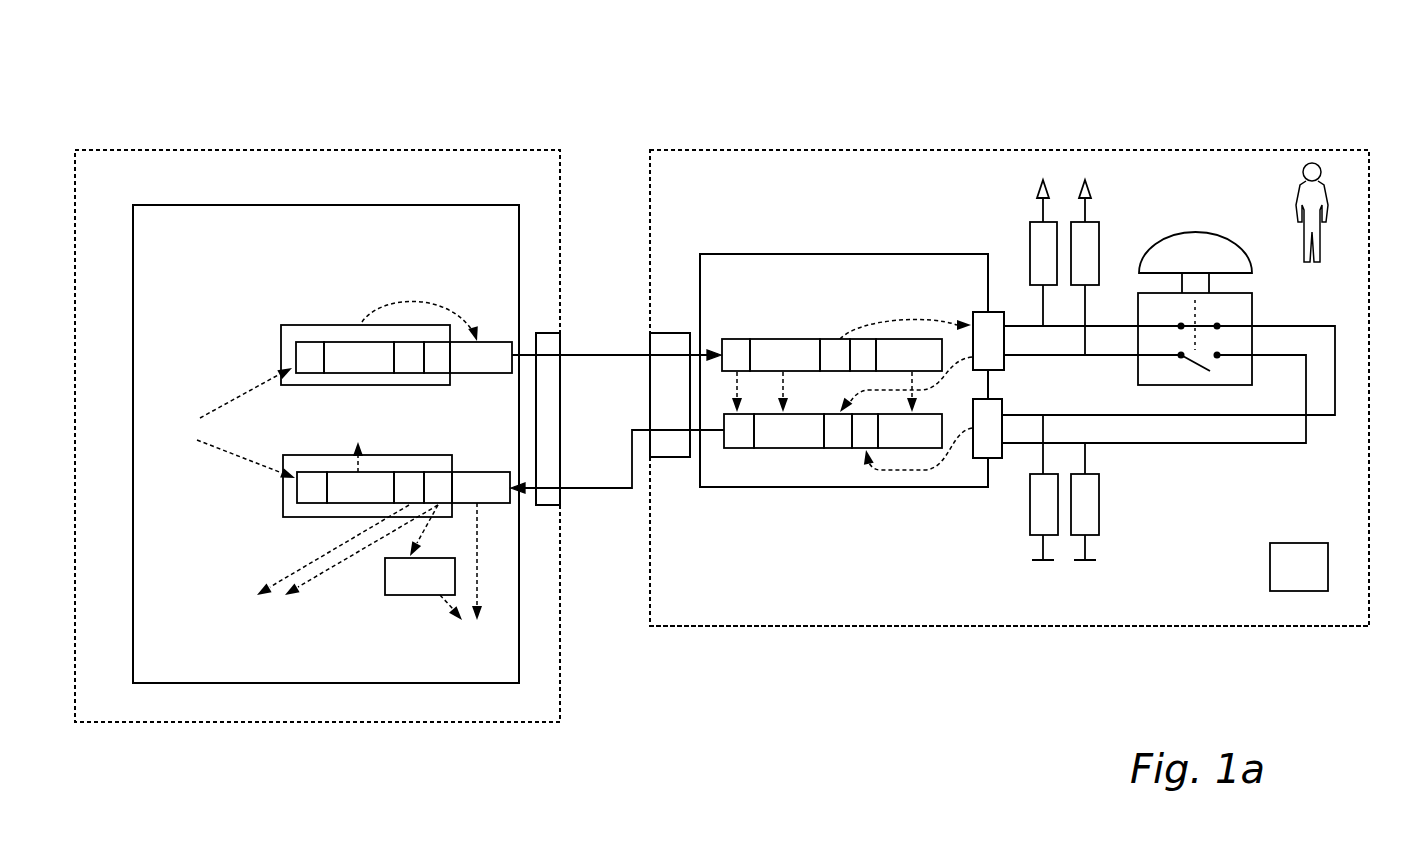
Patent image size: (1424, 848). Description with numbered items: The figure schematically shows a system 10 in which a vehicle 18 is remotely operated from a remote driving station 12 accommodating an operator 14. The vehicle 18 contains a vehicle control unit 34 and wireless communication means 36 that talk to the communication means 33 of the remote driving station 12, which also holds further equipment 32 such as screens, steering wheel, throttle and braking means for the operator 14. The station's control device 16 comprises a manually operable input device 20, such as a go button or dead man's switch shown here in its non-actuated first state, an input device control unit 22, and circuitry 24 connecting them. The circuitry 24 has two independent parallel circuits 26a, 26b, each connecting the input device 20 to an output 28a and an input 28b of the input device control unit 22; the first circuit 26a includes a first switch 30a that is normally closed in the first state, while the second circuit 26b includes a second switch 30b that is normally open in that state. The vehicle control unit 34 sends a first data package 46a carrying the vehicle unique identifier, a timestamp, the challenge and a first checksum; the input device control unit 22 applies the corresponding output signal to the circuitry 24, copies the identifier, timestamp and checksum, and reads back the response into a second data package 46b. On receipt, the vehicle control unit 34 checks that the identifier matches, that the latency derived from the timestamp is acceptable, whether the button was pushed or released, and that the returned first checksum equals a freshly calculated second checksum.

The system 10 is at (640, 98).
The remote driving station 12 is at (1107, 150).
The operator 14 is at (1340, 226).
The control device 16 is at (916, 607).
The vehicle 18 is at (398, 150).
The manually operable input device 20 is at (1222, 232).
The input device control unit 22 is at (775, 254).
The circuitry 24 is at (1250, 458).
The first circuit 26a is at (1110, 326).
The second circuit 26b is at (1095, 358).
The output 28a is at (988, 312).
The input 28b is at (993, 460).
The first switch 30a is at (1222, 324).
The second switch 30b is at (1186, 372).
The equipment 32 is at (1300, 591).
The communication means 33 is at (680, 458).
The vehicle control unit 34 is at (183, 205).
The wireless communication means 36 is at (548, 505).
The first data package 46a is at (258, 333).
The second data package 46b is at (259, 522).